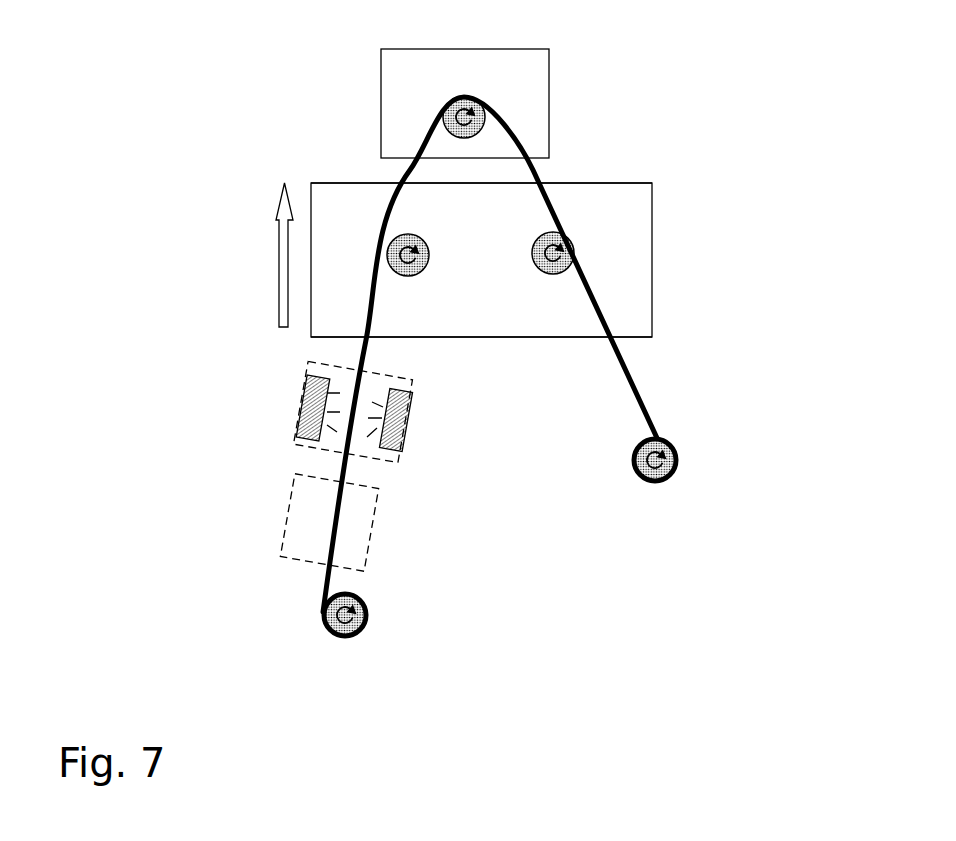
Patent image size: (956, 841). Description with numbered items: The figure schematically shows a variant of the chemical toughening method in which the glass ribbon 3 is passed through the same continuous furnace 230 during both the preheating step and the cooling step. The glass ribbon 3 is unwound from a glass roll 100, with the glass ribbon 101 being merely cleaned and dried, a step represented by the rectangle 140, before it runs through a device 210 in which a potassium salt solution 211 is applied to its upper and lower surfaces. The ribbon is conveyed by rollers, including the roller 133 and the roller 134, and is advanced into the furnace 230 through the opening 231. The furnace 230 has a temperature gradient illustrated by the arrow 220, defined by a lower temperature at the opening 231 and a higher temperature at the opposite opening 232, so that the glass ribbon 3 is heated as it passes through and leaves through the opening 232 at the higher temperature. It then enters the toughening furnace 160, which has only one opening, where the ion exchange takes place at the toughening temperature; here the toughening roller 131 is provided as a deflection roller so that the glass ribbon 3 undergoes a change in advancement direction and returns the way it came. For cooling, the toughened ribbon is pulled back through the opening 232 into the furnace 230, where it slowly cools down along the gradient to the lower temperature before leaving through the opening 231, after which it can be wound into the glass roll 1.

The glass roll 1 is at (660, 437).
The glass ribbon 3 is at (358, 367).
The glass roll 100 is at (323, 631).
The glass ribbon 101 is at (355, 635).
The toughening roller 131 is at (442, 115).
The roller 133 is at (548, 273).
The roller 134 is at (650, 482).
The rectangle 140 is at (288, 516).
The toughening furnace 160 is at (545, 63).
The device 210 is at (303, 393).
The potassium salt solution 211 is at (407, 422).
The arrow 220 is at (277, 220).
The continuous furnace 230 is at (653, 278).
The opening 231 is at (652, 340).
The opening 232 is at (652, 183).